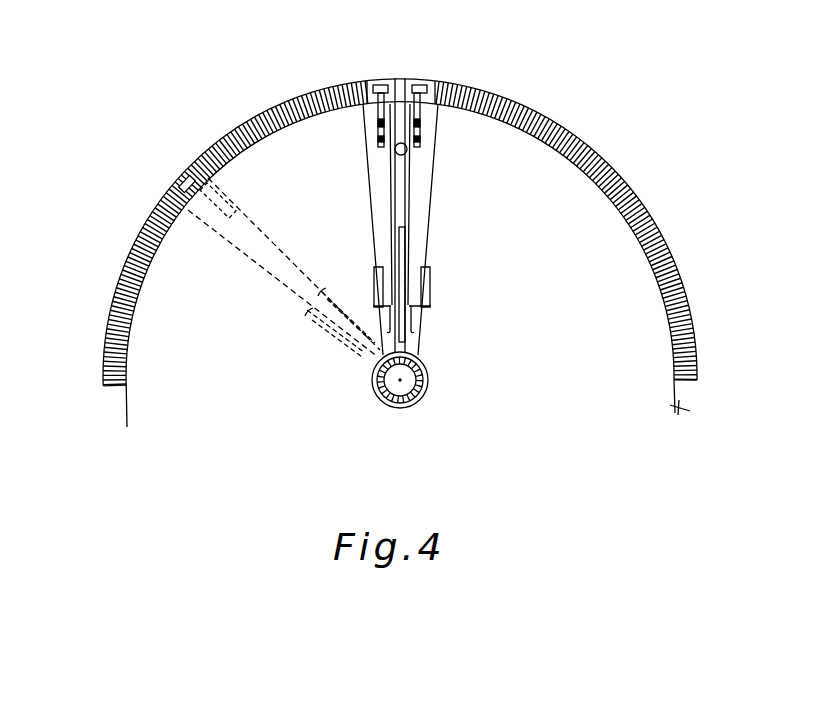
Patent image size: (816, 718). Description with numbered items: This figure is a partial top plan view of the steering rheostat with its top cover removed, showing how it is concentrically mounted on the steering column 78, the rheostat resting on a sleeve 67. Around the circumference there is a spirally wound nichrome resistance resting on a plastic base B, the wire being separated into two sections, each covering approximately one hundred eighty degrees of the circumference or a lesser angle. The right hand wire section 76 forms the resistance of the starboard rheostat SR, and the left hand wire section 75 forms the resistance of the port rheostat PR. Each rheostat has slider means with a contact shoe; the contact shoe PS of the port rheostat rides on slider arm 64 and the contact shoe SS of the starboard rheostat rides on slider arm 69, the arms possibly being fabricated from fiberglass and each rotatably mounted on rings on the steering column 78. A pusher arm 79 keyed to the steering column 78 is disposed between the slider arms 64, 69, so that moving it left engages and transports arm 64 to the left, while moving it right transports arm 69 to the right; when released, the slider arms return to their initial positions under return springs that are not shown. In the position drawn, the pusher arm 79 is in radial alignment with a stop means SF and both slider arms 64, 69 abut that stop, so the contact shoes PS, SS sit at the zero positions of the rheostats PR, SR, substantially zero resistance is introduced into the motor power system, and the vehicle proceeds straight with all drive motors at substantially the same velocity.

The slider arm 64 is at (377, 183).
The slider arm 69 is at (425, 205).
The pusher arm 79 is at (406, 256).
The steering column 78 is at (426, 376).
The sleeve 67 is at (374, 384).
The left hand wire section 75 is at (124, 310).
The right hand wire section 76 is at (682, 322).
The contact shoe PS is at (380, 84).
The contact shoe SS is at (422, 84).
The stop means SF is at (407, 154).
The port rheostat PR is at (125, 262).
The starboard rheostat SR is at (670, 250).
The plastic base B is at (417, 407).